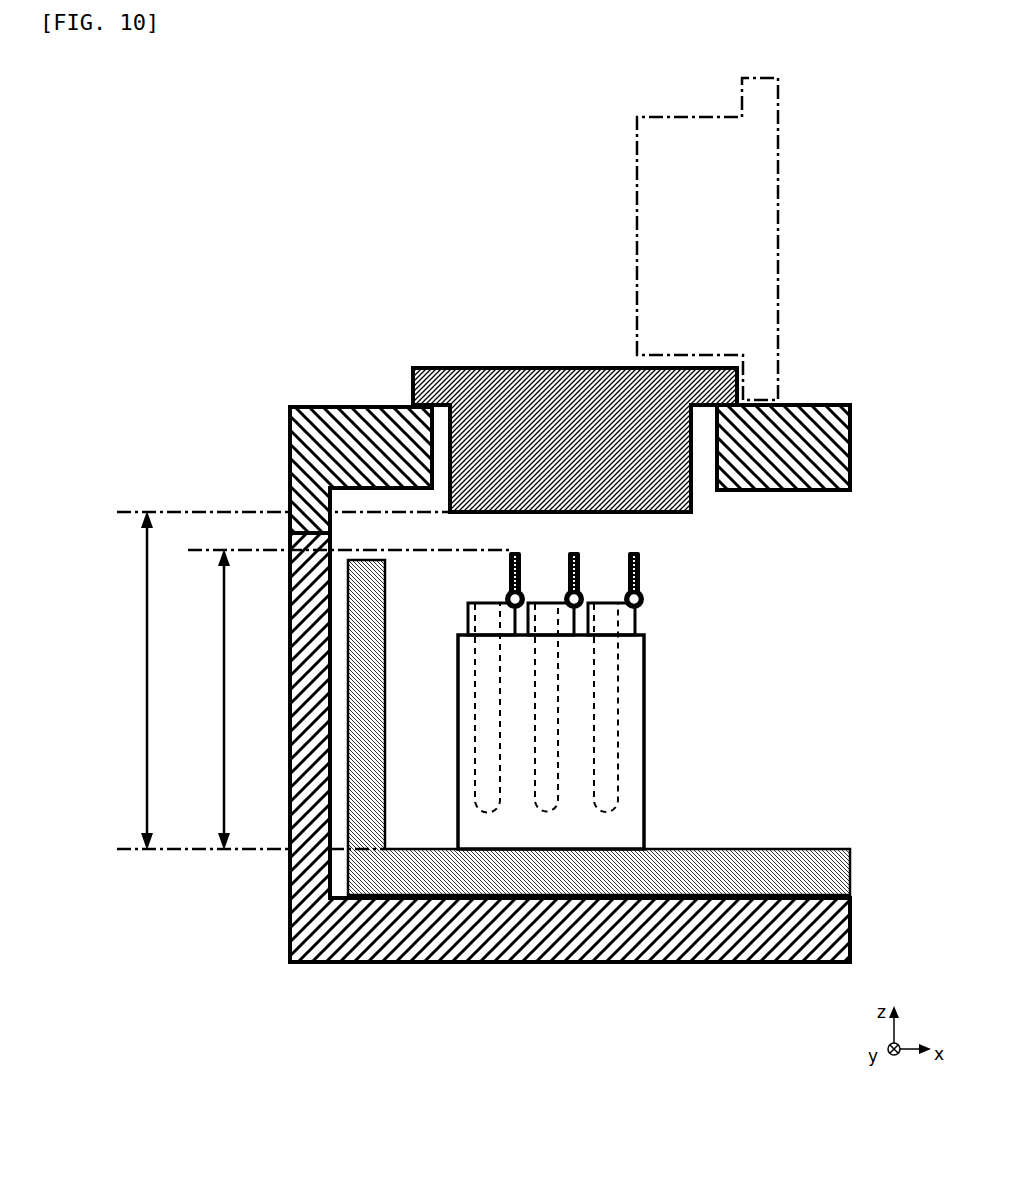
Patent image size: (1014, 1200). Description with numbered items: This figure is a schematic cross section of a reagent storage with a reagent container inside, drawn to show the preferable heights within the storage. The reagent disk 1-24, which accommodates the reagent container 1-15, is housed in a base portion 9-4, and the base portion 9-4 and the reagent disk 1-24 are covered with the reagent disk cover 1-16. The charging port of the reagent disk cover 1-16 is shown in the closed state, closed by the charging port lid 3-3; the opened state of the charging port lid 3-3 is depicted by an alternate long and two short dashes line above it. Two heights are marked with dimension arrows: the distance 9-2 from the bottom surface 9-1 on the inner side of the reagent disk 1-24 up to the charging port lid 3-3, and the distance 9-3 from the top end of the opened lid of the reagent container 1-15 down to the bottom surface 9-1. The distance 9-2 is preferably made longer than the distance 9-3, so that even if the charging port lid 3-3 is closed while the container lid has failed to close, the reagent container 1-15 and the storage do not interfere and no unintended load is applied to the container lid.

The reagent container 1-15 is at (645, 706).
The reagent disk cover 1-16 is at (348, 405).
The reagent disk 1-24 is at (830, 847).
The charging port lid 3-3 is at (625, 218).
The bottom surface 9-1 is at (240, 851).
The distance 9-2 is at (143, 677).
The distance 9-3 is at (223, 725).
The base portion 9-4 is at (287, 912).